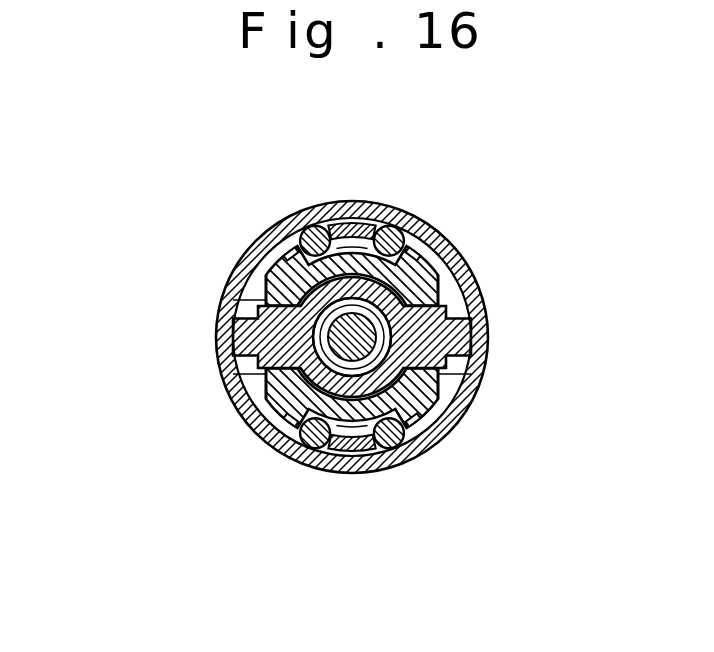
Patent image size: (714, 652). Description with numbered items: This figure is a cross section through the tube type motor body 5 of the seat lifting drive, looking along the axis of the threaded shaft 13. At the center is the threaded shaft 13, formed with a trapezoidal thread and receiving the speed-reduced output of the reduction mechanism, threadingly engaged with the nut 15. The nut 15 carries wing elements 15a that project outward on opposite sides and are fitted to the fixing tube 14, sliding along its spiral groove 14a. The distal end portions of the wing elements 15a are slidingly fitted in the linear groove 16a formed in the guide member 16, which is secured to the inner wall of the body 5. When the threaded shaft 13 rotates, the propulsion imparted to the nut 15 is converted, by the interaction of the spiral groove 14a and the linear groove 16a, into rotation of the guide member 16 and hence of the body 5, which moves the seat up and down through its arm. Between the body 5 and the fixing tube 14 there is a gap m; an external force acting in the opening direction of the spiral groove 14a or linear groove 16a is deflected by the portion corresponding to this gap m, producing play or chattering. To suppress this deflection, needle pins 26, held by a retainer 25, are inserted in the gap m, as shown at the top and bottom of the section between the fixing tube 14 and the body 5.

The tube type motor body 5 is at (496, 299).
The threaded shaft 13 is at (345, 342).
The fixing tube 14 is at (262, 430).
The spiral groove 14a is at (233, 403).
The nut 15 is at (460, 262).
The wing elements 15a is at (233, 298).
The guide member 16 is at (224, 373).
The linear groove 16a is at (228, 302).
The retainer 25 is at (352, 212).
The needle pin 26 is at (316, 228).
The gap m is at (276, 248).